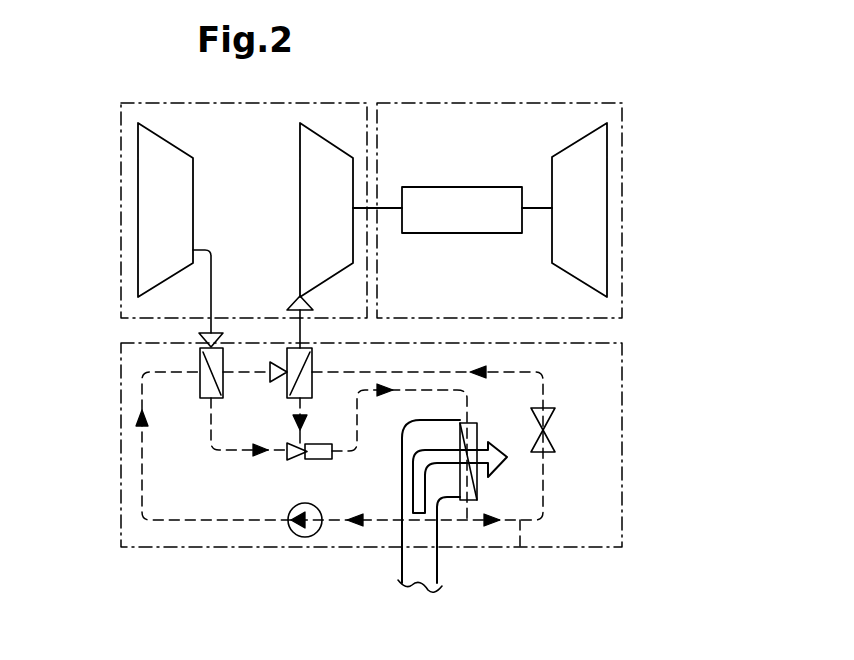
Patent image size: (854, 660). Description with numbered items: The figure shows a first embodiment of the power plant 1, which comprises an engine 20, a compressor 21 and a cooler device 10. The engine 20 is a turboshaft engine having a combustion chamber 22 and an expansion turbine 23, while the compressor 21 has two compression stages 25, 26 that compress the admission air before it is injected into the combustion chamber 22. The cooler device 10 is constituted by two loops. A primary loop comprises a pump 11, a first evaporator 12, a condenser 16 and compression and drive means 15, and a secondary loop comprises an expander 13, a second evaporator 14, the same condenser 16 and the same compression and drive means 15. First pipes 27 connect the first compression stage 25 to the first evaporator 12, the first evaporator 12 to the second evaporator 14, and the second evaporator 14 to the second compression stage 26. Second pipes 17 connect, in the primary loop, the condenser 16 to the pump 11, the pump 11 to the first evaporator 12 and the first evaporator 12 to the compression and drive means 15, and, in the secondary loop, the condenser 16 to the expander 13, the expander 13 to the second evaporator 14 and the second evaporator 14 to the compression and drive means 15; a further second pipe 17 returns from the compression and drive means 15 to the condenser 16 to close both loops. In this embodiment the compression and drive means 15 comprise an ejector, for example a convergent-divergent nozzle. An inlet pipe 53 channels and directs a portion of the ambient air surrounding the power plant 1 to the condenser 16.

The power plant 1 is at (640, 583).
The cooler device 10 is at (622, 512).
The pump 11 is at (298, 536).
The first evaporator 12 is at (197, 389).
The expander 13 is at (557, 426).
The second evaporator 14 is at (312, 355).
The compression and drive means 15 is at (322, 461).
The condenser 16 is at (478, 485).
The second pipes 17 is at (297, 408).
The engine 20 is at (520, 101).
The compressor 21 is at (120, 166).
The combustion chamber 22 is at (470, 223).
The expansion turbine 23 is at (594, 222).
The first compression stage 25 is at (182, 193).
The second compression stage 26 is at (340, 193).
The first pipes 27 is at (297, 328).
The inlet pipe 53 is at (408, 558).